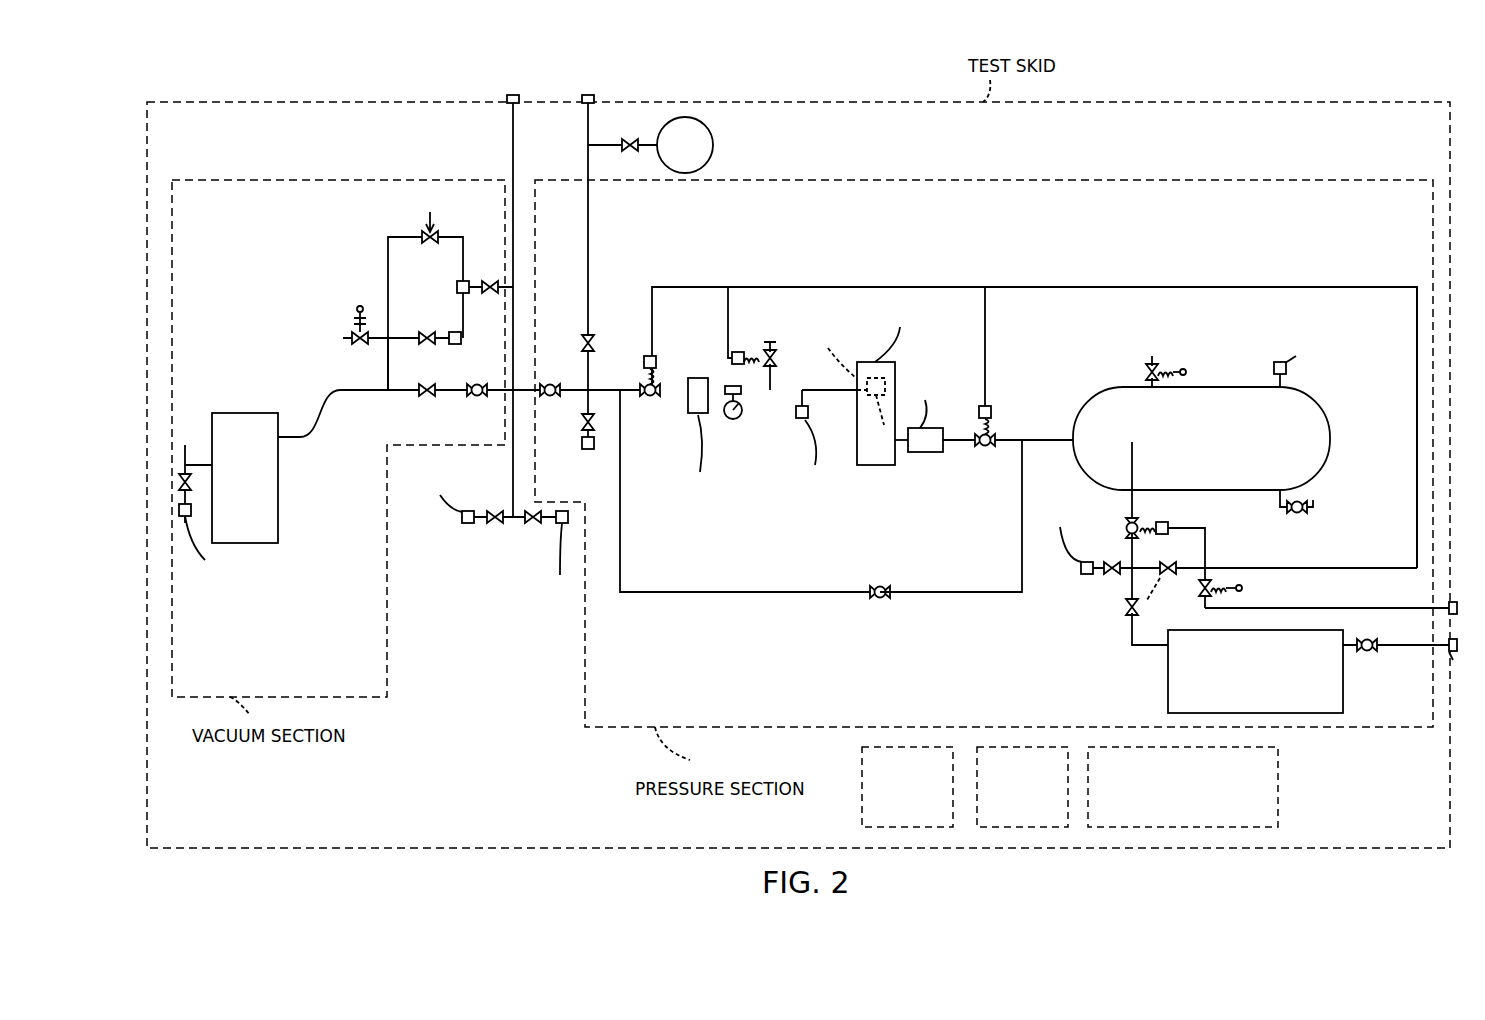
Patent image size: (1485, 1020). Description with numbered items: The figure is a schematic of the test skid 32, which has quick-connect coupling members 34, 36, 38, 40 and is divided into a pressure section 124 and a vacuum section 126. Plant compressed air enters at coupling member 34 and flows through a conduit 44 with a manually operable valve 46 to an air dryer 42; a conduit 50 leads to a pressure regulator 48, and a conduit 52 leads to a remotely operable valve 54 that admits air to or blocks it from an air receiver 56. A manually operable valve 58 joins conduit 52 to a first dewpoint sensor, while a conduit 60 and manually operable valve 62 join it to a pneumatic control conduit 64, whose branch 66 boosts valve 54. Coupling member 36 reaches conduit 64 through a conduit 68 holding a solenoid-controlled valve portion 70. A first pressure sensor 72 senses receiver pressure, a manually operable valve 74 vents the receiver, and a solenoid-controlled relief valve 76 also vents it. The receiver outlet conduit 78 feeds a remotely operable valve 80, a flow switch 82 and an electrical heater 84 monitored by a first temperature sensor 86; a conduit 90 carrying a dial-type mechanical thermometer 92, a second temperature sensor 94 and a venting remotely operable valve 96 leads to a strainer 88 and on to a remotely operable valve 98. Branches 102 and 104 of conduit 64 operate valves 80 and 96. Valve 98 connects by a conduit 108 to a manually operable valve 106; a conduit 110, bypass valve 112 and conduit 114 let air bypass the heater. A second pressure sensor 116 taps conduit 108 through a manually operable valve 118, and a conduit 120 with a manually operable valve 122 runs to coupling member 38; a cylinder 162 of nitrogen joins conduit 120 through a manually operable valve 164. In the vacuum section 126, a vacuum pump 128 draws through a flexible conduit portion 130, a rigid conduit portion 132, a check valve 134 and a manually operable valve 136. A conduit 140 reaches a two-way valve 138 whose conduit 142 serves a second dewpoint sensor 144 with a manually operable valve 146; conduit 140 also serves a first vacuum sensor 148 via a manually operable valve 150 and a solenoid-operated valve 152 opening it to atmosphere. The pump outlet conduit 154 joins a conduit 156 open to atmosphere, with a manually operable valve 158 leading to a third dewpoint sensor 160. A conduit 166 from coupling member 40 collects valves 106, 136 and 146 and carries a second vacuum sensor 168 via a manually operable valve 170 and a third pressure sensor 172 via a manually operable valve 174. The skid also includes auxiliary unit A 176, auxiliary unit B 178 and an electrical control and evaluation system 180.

The test skid 32 is at (1162, 102).
The quick-connect coupling member 34 is at (1450, 658).
The quick-connect coupling member 36 is at (1449, 602).
The quick-connect coupling member 38 is at (588, 95).
The quick-connect coupling member 40 is at (513, 95).
The air dryer 42 is at (1343, 688).
The conduit 44 is at (1418, 649).
The manually operable valve 46 is at (1372, 637).
The pressure regulator 48 is at (1129, 615).
The conduit 50 is at (1152, 646).
The conduit 52 is at (1131, 552).
The remotely operable valve 54 is at (1140, 520).
The air receiver 56 is at (1330, 440).
The manually operable valve 58 is at (1110, 575).
The conduit 60 is at (1148, 565).
The manually operable valve 62 is at (1168, 575).
The pneumatic control conduit 64 is at (1417, 412).
The branch 66 is at (1207, 540).
The conduit 68 is at (1305, 608).
The solenoid-controlled valve portion 70 is at (1202, 592).
The first pressure sensor 72 is at (1274, 368).
The manually operable valve 74 is at (1297, 514).
The relief valve 76 is at (1146, 370).
The conduit 78 is at (1052, 440).
The remotely operable valve 80 is at (985, 448).
The flow switch 82 is at (926, 453).
The electrical heater 84 is at (882, 466).
The first temperature sensor 86 is at (900, 385).
The strainer 88 is at (695, 378).
The conduit 90 is at (826, 389).
The dial-type mechanical thermometer 92 is at (731, 420).
The second temperature sensor 94 is at (795, 414).
The remotely operable valve 96 is at (772, 348).
The remotely operable valve 98 is at (646, 398).
The branch 102 is at (987, 303).
The branch 104 is at (728, 308).
The manually operable valve 106 is at (553, 384).
The conduit 108 is at (602, 388).
The conduit 110 is at (950, 595).
The manually operable valve 112 is at (883, 598).
The conduit 114 is at (738, 595).
The second pressure sensor 116 is at (596, 445).
The manually operable valve 118 is at (582, 422).
The conduit 120 is at (590, 232).
The manually operable valve 122 is at (583, 340).
The pressure section 124 is at (1130, 180).
The vacuum section 126 is at (312, 180).
The vacuum pump 128 is at (278, 525).
The flexible conduit portion 130 is at (290, 438).
The rigid conduit portion 132 is at (355, 392).
The check valve 134 is at (427, 397).
The manually operable valve 136 is at (478, 397).
The manually operable two-way valve 138 is at (425, 235).
The conduit 140 is at (388, 250).
The conduit 142 is at (441, 234).
The second dewpoint sensor 144 is at (456, 283).
The manually operable valve 146 is at (488, 282).
The first vacuum sensor 148 is at (462, 338).
The manually operable valve 150 is at (388, 348).
The solenoid-operated valve 152 is at (348, 340).
The conduit 154 is at (210, 462).
The conduit 156 is at (180, 455).
The manually operable valve 158 is at (178, 482).
The third dewpoint sensor 160 is at (178, 512).
The cylinder of compressed nitrogen gas 162 is at (713, 145).
The manually operable valve 164 is at (640, 150).
The conduit 166 is at (513, 135).
The second vacuum sensor 168 is at (462, 519).
The manually operable valve 170 is at (493, 523).
The third pressure sensor 172 is at (570, 517).
The manually operable valve 174 is at (531, 523).
The auxiliary unit A 176 is at (902, 740).
The auxiliary unit B 178 is at (1012, 742).
The electrical control and evaluation system 180 is at (1098, 742).